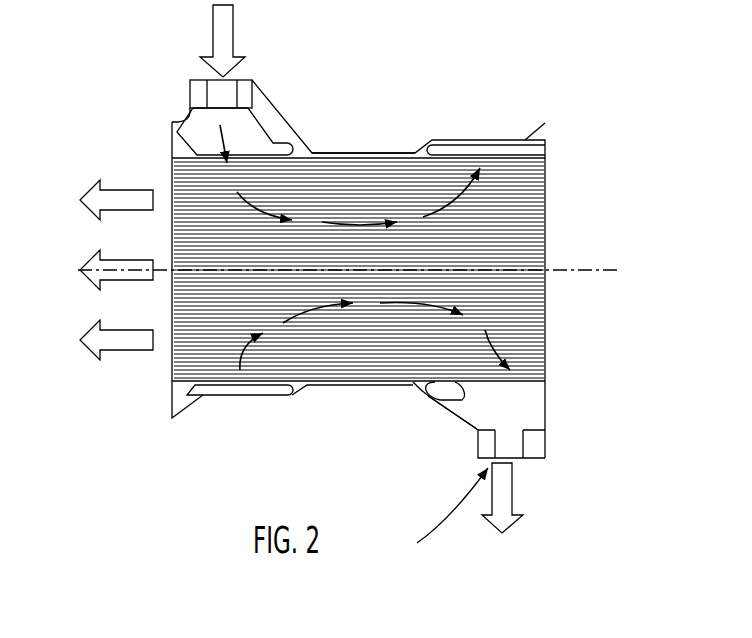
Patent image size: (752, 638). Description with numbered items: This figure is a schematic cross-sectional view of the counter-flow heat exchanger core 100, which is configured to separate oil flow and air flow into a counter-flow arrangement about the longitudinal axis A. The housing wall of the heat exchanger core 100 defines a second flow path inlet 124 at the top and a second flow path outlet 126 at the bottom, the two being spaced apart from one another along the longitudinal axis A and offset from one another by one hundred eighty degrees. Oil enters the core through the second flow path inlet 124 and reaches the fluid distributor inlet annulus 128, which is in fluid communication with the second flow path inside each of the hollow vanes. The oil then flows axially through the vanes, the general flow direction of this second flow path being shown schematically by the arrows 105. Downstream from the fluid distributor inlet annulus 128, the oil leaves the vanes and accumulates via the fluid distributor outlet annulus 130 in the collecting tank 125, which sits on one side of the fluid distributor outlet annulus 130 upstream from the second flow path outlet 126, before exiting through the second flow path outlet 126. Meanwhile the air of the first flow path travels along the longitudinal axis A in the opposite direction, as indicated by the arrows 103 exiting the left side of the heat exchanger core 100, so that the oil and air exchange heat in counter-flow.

The counter-flow heat exchanger core 100 is at (123, 75).
The arrows 103 is at (135, 190).
The arrows 105 is at (512, 483).
The second flow path inlet 124 is at (232, 83).
The collecting tank 125 is at (520, 412).
The second flow path outlet 126 is at (434, 516).
The fluid distributor inlet annulus 128 is at (252, 128).
The fluid distributor outlet annulus 130 is at (513, 148).
The longitudinal axis A is at (360, 274).